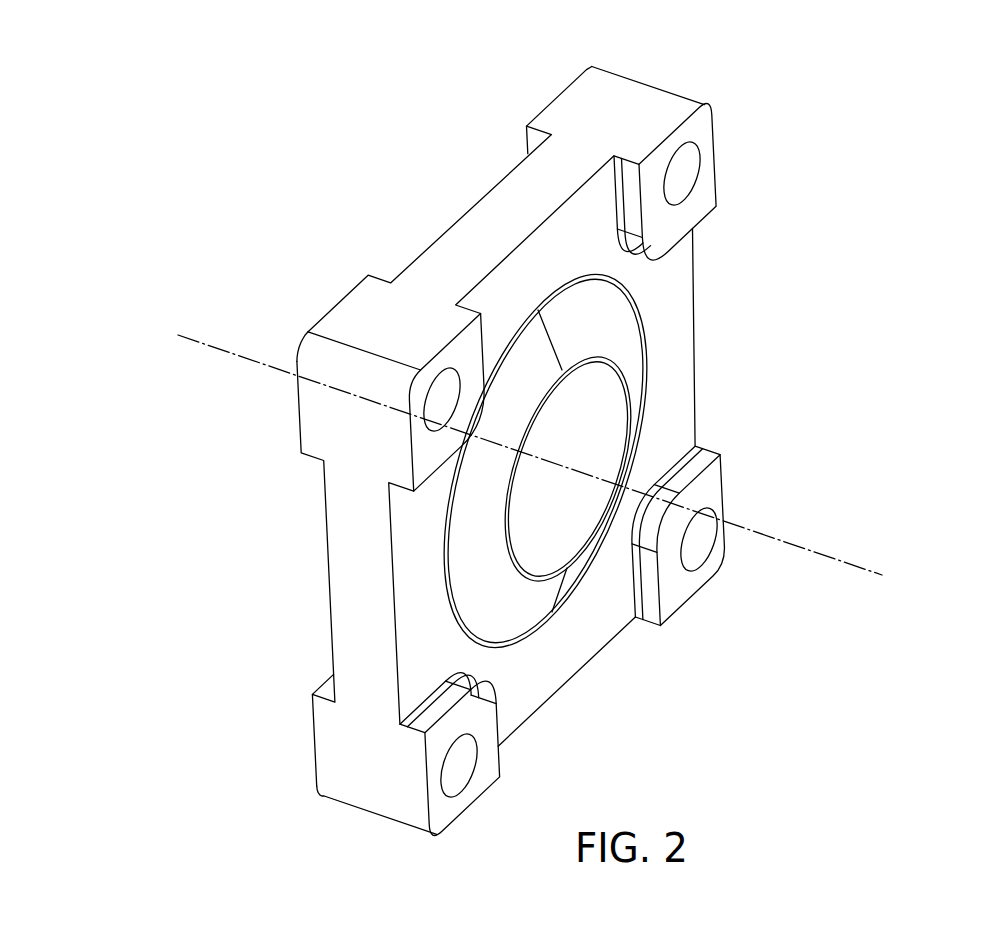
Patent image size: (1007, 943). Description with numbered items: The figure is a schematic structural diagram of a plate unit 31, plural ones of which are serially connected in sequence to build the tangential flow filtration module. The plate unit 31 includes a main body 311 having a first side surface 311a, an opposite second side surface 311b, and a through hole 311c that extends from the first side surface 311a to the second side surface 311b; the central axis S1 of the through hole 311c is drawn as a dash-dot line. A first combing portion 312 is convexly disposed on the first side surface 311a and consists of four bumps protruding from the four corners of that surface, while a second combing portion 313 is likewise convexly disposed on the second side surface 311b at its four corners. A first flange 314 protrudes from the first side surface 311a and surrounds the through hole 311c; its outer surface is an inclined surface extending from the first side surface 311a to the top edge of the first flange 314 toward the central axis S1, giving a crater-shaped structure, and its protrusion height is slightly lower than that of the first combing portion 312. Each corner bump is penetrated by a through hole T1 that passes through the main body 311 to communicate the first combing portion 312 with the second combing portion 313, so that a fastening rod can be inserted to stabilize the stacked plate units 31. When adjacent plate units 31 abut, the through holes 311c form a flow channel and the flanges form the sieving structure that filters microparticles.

The plate unit 31 is at (160, 121).
The main body 311 is at (617, 105).
The first side surface 311a is at (673, 300).
The second side surface 311b is at (453, 220).
The through hole 311c is at (573, 523).
The first combing portion 312 is at (703, 187).
The second combing portion 313 is at (560, 100).
The first flange 314 is at (630, 360).
The through hole T1 is at (683, 163).
The central axis S1 is at (833, 555).